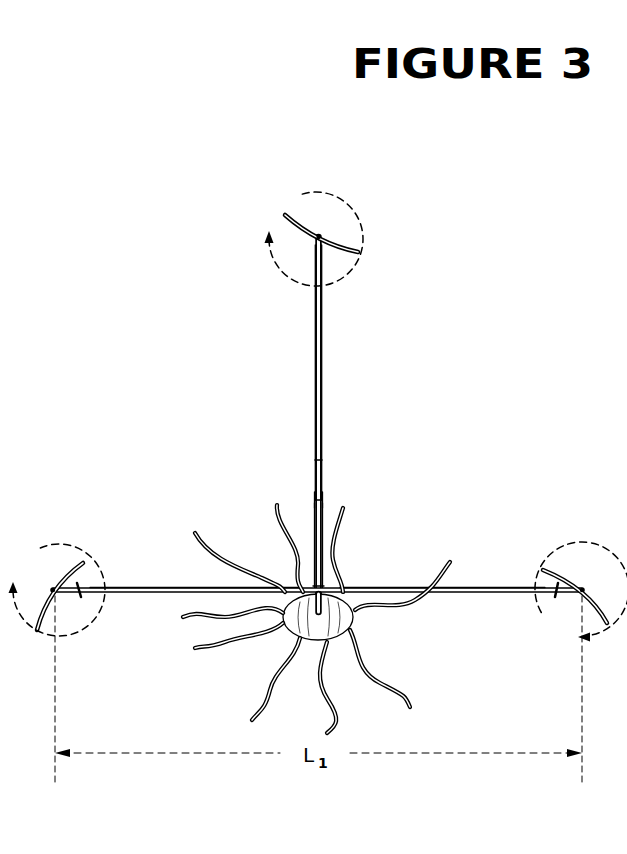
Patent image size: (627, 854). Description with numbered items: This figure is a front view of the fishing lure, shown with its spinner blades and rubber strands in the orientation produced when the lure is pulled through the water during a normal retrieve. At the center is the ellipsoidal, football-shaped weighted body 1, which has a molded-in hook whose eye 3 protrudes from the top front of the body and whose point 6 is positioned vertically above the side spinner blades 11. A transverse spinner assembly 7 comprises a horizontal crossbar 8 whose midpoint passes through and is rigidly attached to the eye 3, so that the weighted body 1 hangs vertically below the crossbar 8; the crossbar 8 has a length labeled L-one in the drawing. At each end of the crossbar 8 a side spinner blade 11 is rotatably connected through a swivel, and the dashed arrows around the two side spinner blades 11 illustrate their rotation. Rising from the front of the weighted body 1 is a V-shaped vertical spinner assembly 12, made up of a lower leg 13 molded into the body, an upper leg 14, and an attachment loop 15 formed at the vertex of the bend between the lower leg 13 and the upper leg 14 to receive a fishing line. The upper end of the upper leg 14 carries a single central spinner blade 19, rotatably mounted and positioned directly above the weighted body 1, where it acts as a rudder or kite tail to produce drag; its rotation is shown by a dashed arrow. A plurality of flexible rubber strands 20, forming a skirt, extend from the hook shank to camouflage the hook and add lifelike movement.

The weighted body 1 is at (355, 623).
The eye 3 is at (323, 583).
The point 6 is at (322, 503).
The transverse spinner assembly 7 is at (154, 579).
The horizontal crossbar 8 is at (176, 591).
The side spinner blade 11 is at (53, 590).
The V-shaped vertical spinner assembly 12 is at (308, 386).
The lower leg 13 is at (315, 493).
The upper leg 14 is at (321, 343).
The attachment loop 15 is at (322, 472).
The central spinner blade 19 is at (290, 218).
The flexible rubber strands 20 is at (268, 688).